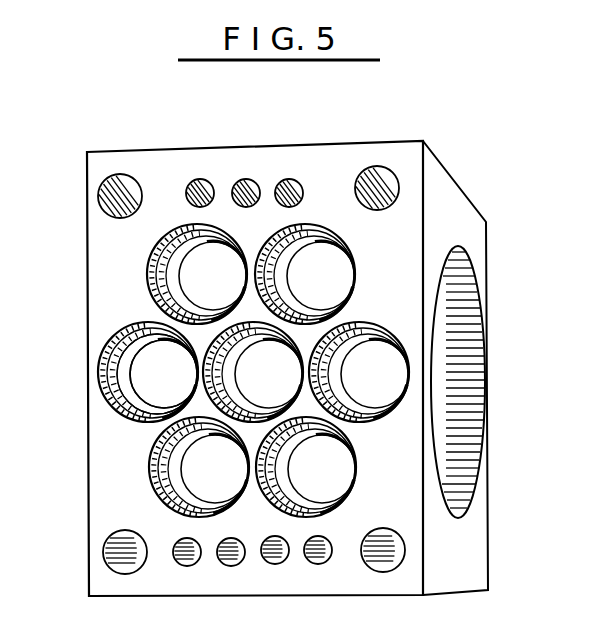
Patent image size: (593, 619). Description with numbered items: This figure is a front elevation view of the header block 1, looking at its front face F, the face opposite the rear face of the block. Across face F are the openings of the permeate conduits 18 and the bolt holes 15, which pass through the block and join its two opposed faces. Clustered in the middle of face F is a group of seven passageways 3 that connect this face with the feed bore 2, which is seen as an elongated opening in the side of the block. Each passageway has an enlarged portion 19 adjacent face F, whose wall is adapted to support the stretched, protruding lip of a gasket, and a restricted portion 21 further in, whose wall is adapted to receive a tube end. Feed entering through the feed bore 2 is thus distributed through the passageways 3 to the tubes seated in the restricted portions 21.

The header block 1 is at (494, 238).
The feed bore 2 is at (440, 386).
The passageways 3 is at (160, 372).
The bolt holes 15 is at (104, 186).
The permeate conduits 18 is at (200, 180).
The enlarged portions 19 is at (110, 340).
The restricted portions 21 is at (104, 392).
The front face F is at (115, 252).